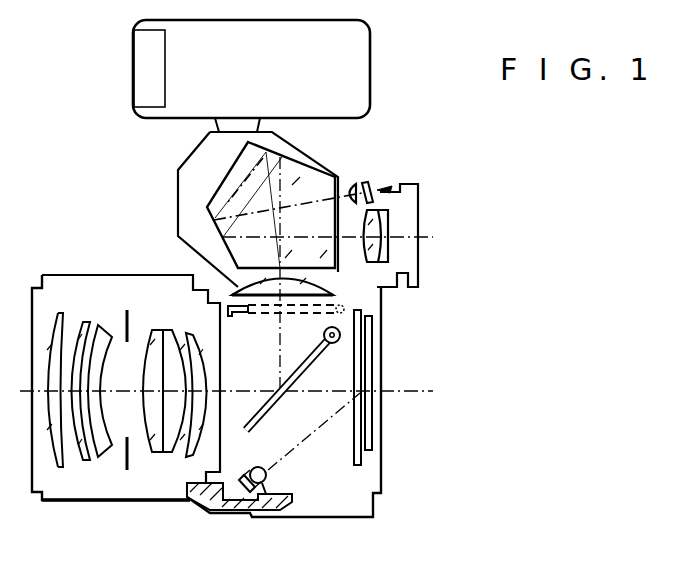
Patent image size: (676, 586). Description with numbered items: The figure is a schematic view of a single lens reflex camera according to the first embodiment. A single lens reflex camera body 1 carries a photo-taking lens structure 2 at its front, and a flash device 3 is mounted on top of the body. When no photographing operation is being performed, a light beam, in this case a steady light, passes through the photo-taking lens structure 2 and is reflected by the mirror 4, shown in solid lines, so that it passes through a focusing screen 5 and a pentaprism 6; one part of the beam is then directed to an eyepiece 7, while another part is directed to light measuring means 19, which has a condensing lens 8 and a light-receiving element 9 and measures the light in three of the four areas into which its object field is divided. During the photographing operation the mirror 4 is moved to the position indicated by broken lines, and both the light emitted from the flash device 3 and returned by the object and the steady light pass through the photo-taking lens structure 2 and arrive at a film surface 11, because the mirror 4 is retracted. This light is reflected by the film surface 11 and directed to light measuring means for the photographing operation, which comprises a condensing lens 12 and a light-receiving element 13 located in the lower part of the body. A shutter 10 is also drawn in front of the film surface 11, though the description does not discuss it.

The single lens reflex camera body 1 is at (335, 510).
The photo-taking lens structure 2 is at (92, 493).
The flash device 3 is at (365, 36).
The mirror 4 is at (240, 322).
The focusing screen 5 is at (232, 284).
The pentaprism 6 is at (333, 168).
The eyepiece 7 is at (388, 219).
The condensing lens 8 is at (366, 181).
The light-receiving element 9 is at (357, 186).
The shutter 10 is at (362, 330).
The film surface 11 is at (373, 348).
The condensing lens 12 is at (277, 497).
The light-receiving element 13 is at (230, 510).
The light measuring means 19 is at (390, 189).